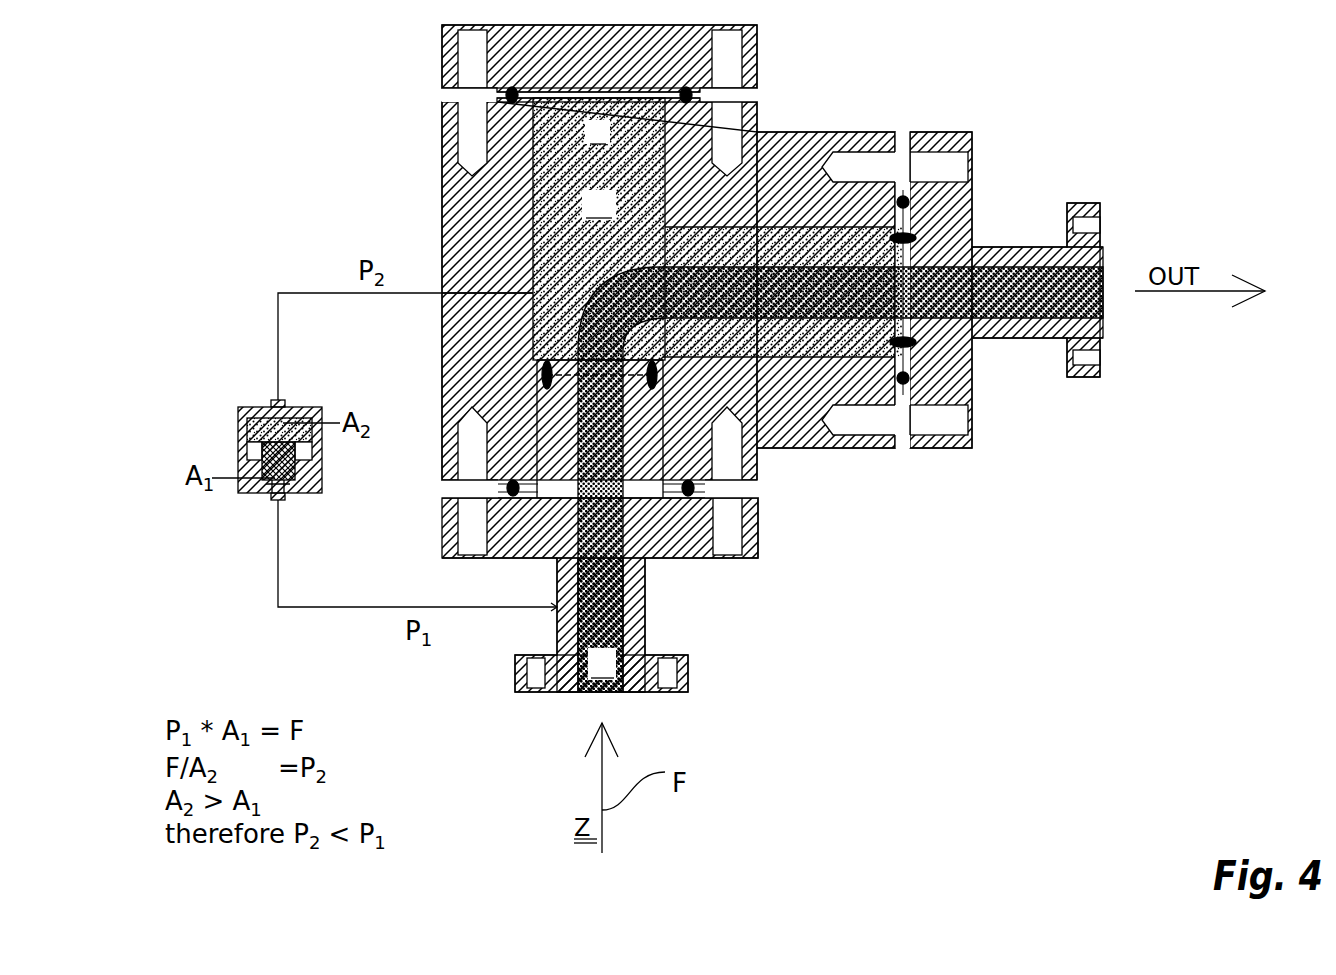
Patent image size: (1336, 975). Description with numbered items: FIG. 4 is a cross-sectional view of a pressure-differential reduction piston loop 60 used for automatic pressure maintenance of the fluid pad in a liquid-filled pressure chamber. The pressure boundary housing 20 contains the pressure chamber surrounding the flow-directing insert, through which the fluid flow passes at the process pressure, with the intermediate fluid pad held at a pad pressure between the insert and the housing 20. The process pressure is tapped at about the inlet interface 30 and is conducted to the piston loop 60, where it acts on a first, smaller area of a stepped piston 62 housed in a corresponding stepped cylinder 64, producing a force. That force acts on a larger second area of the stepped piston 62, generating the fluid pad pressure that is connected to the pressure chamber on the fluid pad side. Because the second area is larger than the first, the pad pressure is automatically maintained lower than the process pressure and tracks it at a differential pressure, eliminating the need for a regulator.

The pressure boundary housing 20 is at (826, 450).
The inlet interface 30 is at (565, 692).
The pressure-differential reduction piston loop 60 is at (258, 297).
The stepped piston 62 is at (245, 443).
The stepped cylinder 64 is at (322, 476).